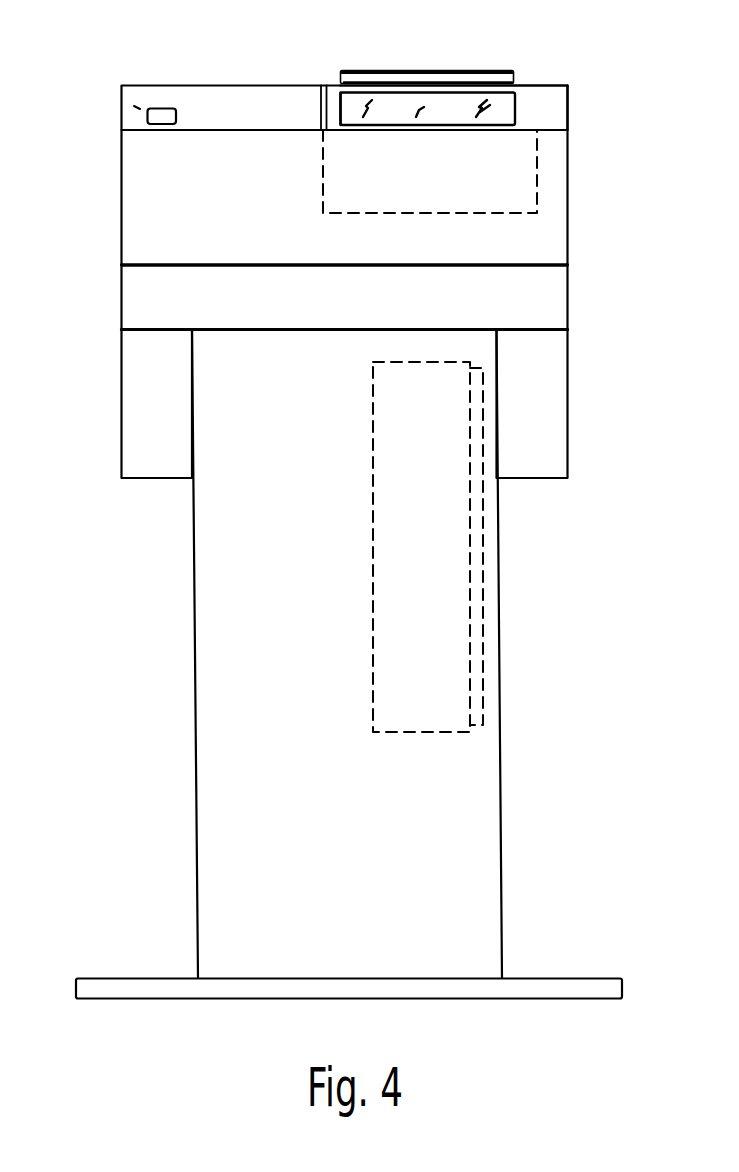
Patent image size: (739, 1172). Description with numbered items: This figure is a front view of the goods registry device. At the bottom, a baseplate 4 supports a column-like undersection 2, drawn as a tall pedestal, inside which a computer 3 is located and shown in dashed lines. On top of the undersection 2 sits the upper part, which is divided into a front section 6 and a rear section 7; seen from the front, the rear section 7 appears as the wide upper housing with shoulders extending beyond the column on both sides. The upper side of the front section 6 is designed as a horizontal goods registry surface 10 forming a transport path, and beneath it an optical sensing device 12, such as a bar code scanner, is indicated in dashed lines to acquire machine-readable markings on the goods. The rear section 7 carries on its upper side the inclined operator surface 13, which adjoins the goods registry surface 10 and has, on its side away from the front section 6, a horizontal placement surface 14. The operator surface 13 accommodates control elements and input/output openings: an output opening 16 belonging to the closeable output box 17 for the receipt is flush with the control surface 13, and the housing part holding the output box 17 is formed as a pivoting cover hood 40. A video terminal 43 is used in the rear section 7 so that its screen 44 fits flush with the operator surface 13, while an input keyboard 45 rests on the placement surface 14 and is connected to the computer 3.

The column-like undersection 2 is at (355, 873).
The computer 3 is at (483, 599).
The baseplate 4 is at (581, 979).
The front section 6 is at (131, 295).
The rear section 7 is at (133, 415).
The goods registry surface 10 is at (550, 125).
The optical sensing device 12 is at (322, 193).
The operator surface 13 is at (557, 100).
The placement surface 14 is at (548, 85).
The output opening 16 is at (142, 110).
The output box 17 is at (164, 116).
The cover hood 40 is at (256, 122).
The video terminal 43 is at (518, 106).
The screen 44 is at (349, 108).
The input keyboard 45 is at (376, 70).